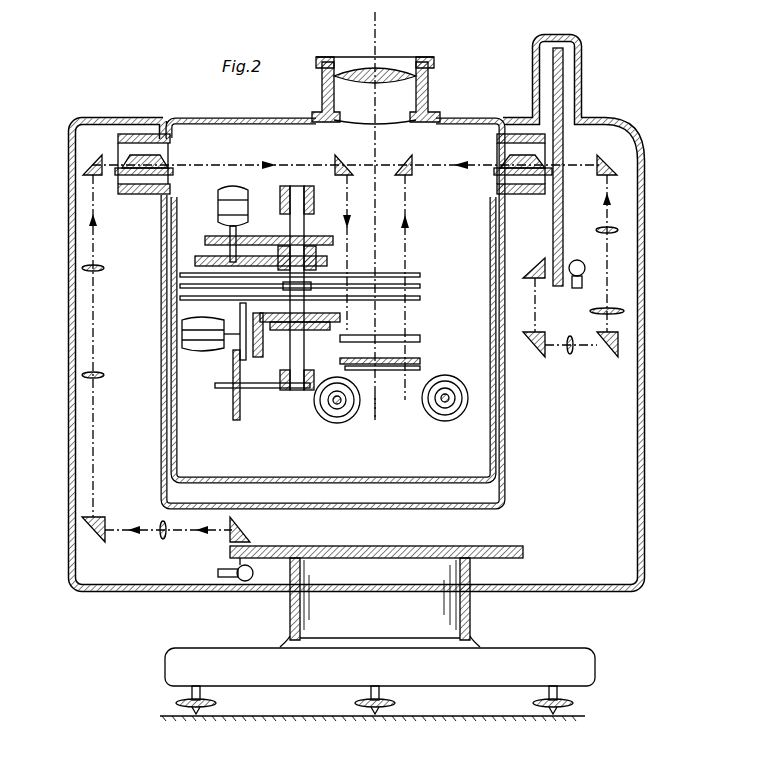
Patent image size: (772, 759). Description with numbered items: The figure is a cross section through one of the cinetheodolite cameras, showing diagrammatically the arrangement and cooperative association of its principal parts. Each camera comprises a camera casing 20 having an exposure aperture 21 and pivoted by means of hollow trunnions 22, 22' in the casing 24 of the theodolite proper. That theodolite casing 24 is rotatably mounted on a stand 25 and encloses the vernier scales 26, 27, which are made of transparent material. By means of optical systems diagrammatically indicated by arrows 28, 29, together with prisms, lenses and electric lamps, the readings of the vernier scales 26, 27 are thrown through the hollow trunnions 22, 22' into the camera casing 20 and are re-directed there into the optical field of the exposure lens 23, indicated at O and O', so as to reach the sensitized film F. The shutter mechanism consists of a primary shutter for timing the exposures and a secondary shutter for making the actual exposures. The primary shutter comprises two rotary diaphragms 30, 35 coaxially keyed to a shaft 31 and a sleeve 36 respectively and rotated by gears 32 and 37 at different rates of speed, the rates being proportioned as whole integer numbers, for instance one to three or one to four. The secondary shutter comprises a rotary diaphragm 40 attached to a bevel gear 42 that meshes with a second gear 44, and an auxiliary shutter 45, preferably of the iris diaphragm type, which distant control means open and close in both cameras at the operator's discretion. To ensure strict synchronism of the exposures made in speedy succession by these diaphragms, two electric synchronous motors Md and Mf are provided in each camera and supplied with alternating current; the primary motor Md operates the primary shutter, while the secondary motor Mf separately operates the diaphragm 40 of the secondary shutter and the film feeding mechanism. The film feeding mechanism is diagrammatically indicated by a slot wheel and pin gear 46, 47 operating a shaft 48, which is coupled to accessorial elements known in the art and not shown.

The camera casing 20 is at (197, 117).
The exposure aperture 21 is at (408, 98).
The hollow trunnion 22 is at (144, 188).
The hollow trunnion 22' is at (523, 182).
The exposure lens 23 is at (368, 62).
The casing of the theodolite 24 is at (645, 158).
The stand 25 is at (172, 672).
The vernier scale 26 is at (228, 556).
The vernier scale 27 is at (563, 85).
The optical system 28 is at (268, 158).
The optical system 29 is at (410, 214).
The rotary diaphragm 30 is at (420, 274).
The shaft 31 is at (304, 220).
The gear 32 is at (252, 236).
The rotary diaphragm 35 is at (420, 286).
The sleeve 36 is at (312, 272).
The gear 37 is at (253, 249).
The rotary diaphragm 40 is at (420, 298).
The bevel gear 42 is at (325, 314).
The second gear 44 is at (263, 346).
The auxiliary shutter 45 is at (420, 338).
The slot wheel 46 is at (240, 410).
The pin gear 47 is at (240, 310).
The shaft 48 is at (283, 390).
The primary motor Md is at (219, 218).
The secondary motor Mf is at (211, 350).
The sensitized film F is at (430, 370).
The optical field indication O is at (373, 210).
The optical field indication O' is at (380, 407).